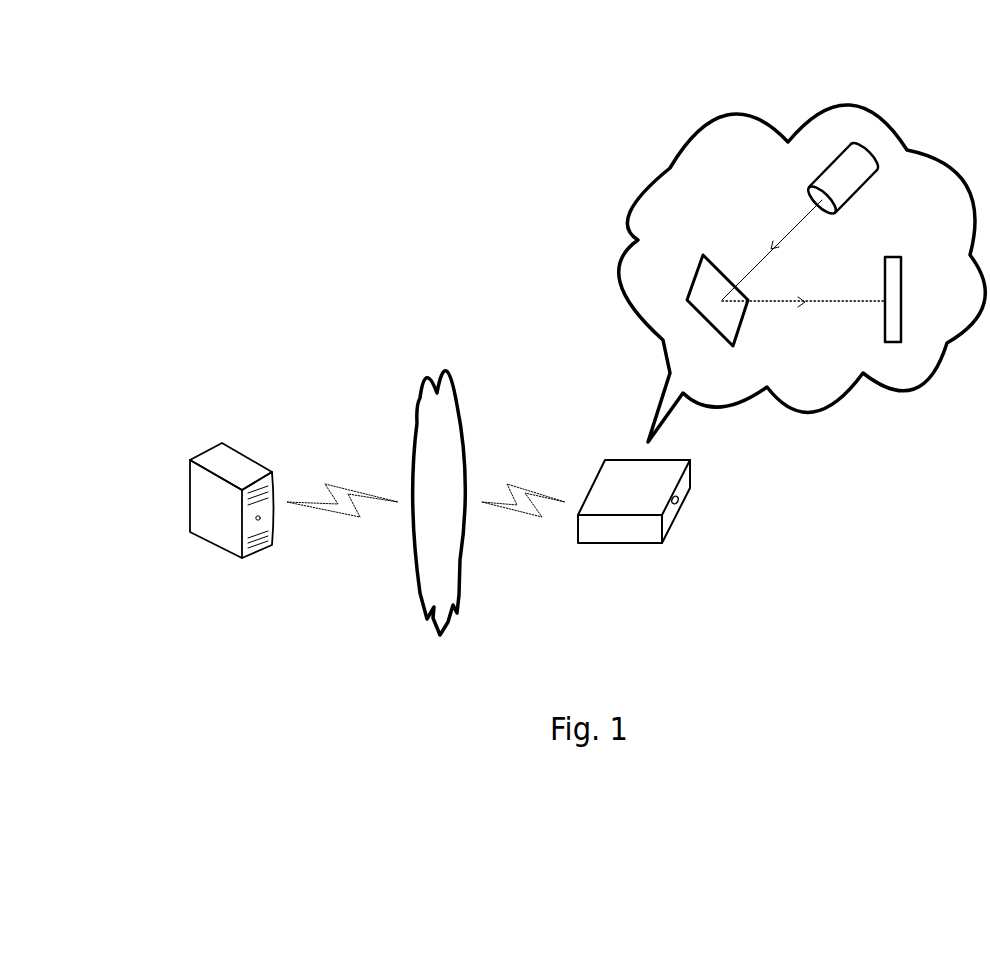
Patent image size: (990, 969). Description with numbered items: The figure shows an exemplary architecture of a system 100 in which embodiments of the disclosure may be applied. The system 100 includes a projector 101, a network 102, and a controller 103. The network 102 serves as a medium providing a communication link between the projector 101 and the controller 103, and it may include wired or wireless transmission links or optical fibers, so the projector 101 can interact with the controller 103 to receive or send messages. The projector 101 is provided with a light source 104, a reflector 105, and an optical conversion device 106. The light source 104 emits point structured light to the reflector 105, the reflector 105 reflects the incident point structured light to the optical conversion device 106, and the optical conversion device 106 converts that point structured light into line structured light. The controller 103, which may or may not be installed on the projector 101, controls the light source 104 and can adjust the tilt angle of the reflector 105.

The system 100 is at (971, 73).
The projector 101 is at (634, 516).
The network 102 is at (439, 503).
The controller 103 is at (232, 518).
The light source 104 is at (800, 221).
The reflector 105 is at (718, 316).
The optical conversion device 106 is at (892, 315).